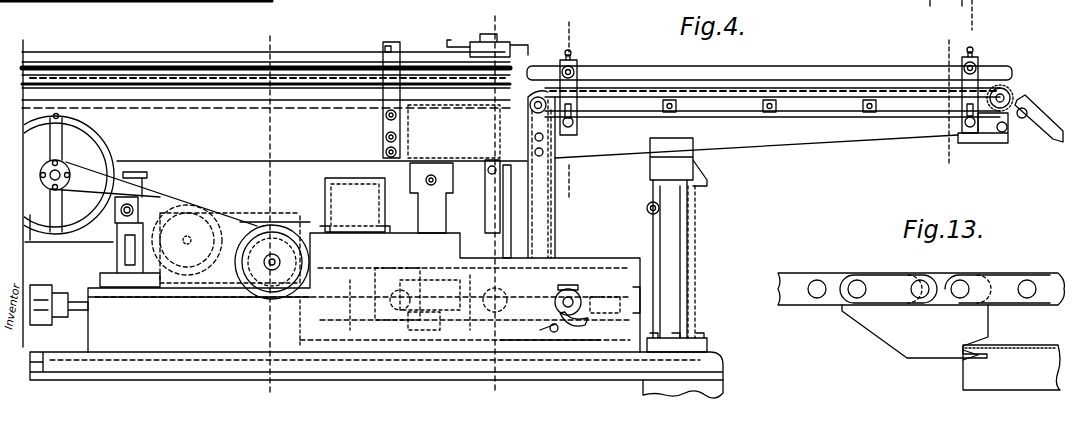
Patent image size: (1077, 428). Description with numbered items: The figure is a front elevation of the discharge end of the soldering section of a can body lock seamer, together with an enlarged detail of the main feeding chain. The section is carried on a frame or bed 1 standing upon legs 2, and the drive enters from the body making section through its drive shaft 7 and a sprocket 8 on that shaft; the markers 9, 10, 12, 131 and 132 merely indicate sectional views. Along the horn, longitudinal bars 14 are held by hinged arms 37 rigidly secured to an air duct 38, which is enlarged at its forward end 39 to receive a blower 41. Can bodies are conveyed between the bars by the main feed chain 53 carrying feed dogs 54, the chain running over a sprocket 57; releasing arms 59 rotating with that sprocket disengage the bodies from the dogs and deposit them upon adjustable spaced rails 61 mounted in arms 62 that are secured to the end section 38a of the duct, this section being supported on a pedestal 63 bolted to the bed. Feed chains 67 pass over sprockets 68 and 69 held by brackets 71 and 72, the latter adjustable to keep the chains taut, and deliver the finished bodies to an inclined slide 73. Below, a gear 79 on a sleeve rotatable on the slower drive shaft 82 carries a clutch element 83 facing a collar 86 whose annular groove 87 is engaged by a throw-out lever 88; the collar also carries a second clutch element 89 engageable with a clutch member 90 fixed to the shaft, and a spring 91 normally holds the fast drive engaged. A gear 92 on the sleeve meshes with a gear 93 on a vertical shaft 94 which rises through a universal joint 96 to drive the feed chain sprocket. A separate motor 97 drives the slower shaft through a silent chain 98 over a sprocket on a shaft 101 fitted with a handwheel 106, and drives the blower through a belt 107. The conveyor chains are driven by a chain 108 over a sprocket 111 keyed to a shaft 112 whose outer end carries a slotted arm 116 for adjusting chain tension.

In FIG. 4, the frame or bed 1 is at (712, 362).
In FIG. 4, the legs 2 is at (642, 390).
In FIG. 4, the drive shaft 7 is at (491, 21).
In FIG. 4, the sprocket 8 is at (266, 43).
In FIG. 4, the section line 9 is at (992, 12).
In FIG. 4, the section line 10 is at (573, 43).
In FIG. 4, the section line 12 is at (945, 48).
In FIG. 4, the longitudinal bars 14 is at (300, 52).
In FIG. 4, the hinged arms 37 is at (401, 50).
In FIG. 4, the air duct 38 is at (292, 158).
In FIG. 4, the end section of air duct 38a is at (826, 142).
In FIG. 4, the enlarged forward end of duct 39 is at (68, 193).
In FIG. 4, the blower 41 is at (90, 143).
In FIG. 4, the main feed chain 53 is at (338, 70).
In FIG. 13, the main feed chain 53 is at (993, 274).
In FIG. 13, the feed dogs 54 is at (900, 344).
In FIG. 4, the sprocket 57 is at (514, 44).
In FIG. 4, the releasing arms 59 is at (456, 44).
In FIG. 4, the adjustable spaced rails 61 is at (663, 67).
In FIG. 4, the arms 62 is at (580, 80).
In FIG. 4, the pedestal 63 is at (695, 270).
In FIG. 4, the feed chains 67 is at (776, 88).
In FIG. 4, the sprocket 68 is at (540, 96).
In FIG. 4, the sprocket 69 is at (1010, 92).
In FIG. 4, the brackets 71 is at (545, 163).
In FIG. 4, the brackets 72 is at (1028, 110).
In FIG. 4, the inclined slide 73 is at (1048, 136).
In FIG. 4, the gear 79 is at (422, 330).
In FIG. 4, the second drive shaft 82 is at (309, 322).
In FIG. 4, the clutch element 83 is at (436, 295).
In FIG. 4, the collar 86 is at (407, 294).
In FIG. 4, the annular groove 87 is at (465, 356).
In FIG. 4, the throw-out lever 88 is at (422, 278).
In FIG. 4, the second clutch element 89 is at (400, 312).
In FIG. 4, the clutch member 90 is at (367, 309).
In FIG. 4, the spring 91 is at (350, 300).
In FIG. 4, the gear 92 is at (495, 293).
In FIG. 4, the gear 93 is at (468, 307).
In FIG. 4, the vertical shaft 94 is at (511, 211).
In FIG. 4, the universal joint 96 is at (485, 207).
In FIG. 4, the motor 97 is at (200, 212).
In FIG. 4, the silent chain 98 is at (270, 215).
In FIG. 4, the shaft 101 is at (285, 232).
In FIG. 4, the handwheel 106 is at (248, 286).
In FIG. 4, the belt 107 is at (150, 200).
In FIG. 4, the chain 108 is at (557, 252).
In FIG. 4, the sprocket 111 is at (550, 354).
In FIG. 4, the shaft 112 is at (546, 333).
In FIG. 4, the slotted arm 116 is at (585, 325).
In FIG. 4, the section line 131 is at (950, 5).
In FIG. 4, the section line 132 is at (915, 5).